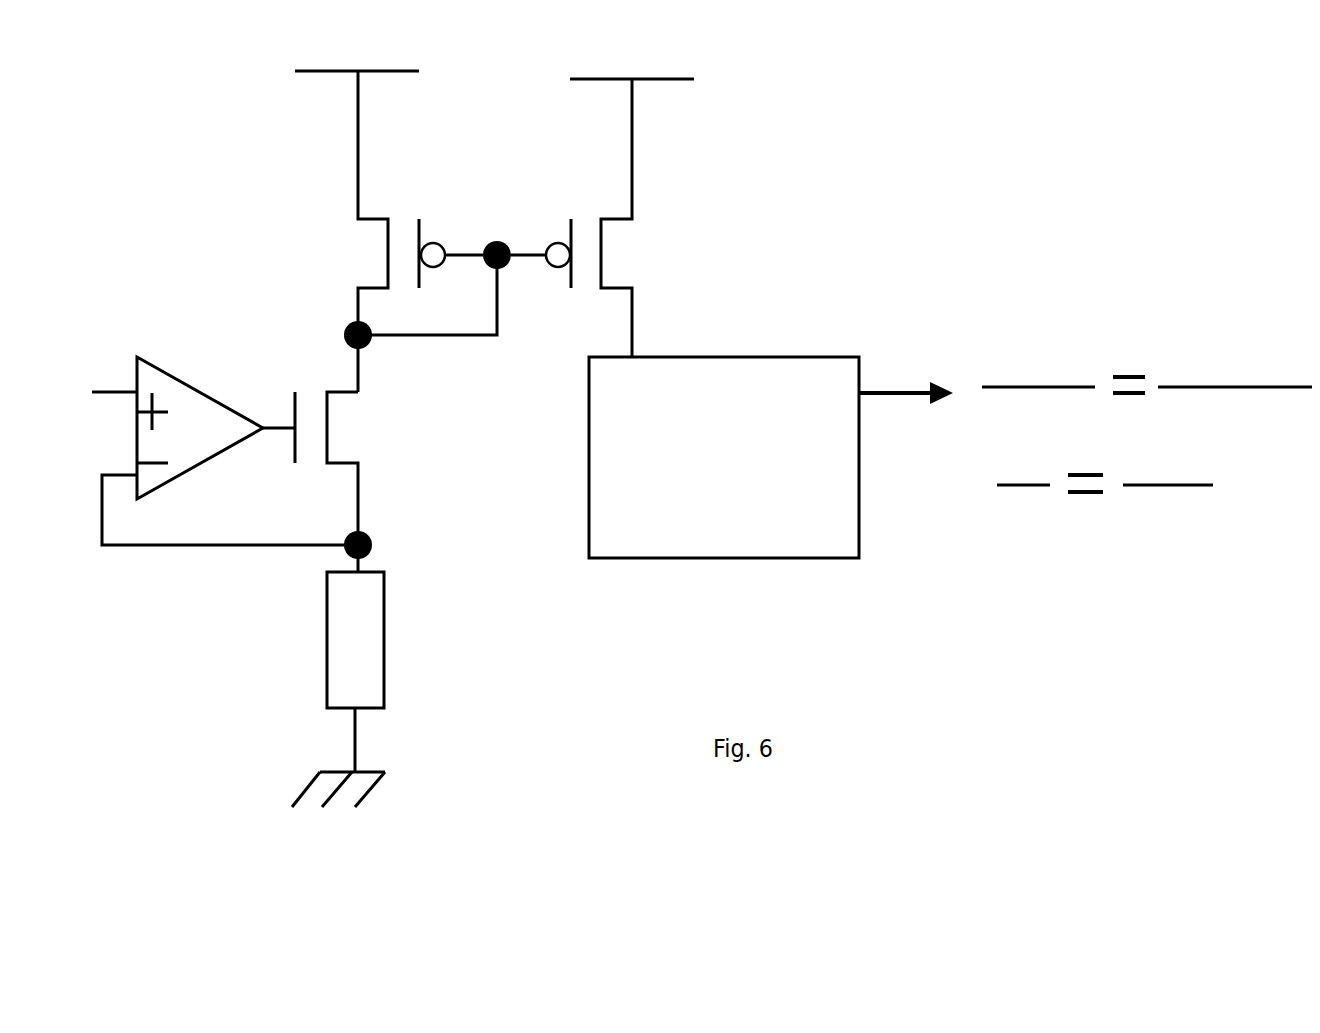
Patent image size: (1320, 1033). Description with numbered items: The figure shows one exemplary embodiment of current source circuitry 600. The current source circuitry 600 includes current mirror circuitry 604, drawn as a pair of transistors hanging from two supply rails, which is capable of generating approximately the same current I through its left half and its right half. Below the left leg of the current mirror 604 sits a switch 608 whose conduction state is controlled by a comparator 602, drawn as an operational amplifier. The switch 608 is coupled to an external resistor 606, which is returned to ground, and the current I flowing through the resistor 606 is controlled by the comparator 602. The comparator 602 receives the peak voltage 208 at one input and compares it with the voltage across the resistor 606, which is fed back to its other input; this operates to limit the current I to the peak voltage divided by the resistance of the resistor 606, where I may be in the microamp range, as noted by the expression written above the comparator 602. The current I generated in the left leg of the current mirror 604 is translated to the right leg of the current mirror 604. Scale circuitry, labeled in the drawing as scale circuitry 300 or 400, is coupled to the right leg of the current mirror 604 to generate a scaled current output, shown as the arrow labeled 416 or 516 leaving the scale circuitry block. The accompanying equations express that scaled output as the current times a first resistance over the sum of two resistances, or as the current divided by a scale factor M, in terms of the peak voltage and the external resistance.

The current source circuitry 600 is at (857, 187).
The Vpeak 208 is at (112, 392).
The comparator 602 is at (180, 375).
The current mirror circuitry 604 is at (495, 207).
The resistor (Rext) 606 is at (327, 612).
The switch 608 is at (328, 468).
The scaled current output 416 is at (956, 351).
The scaled current output 516 is at (887, 388).
The scale circuitry 300 is at (724, 457).
The scale circuitry 400 is at (724, 457).